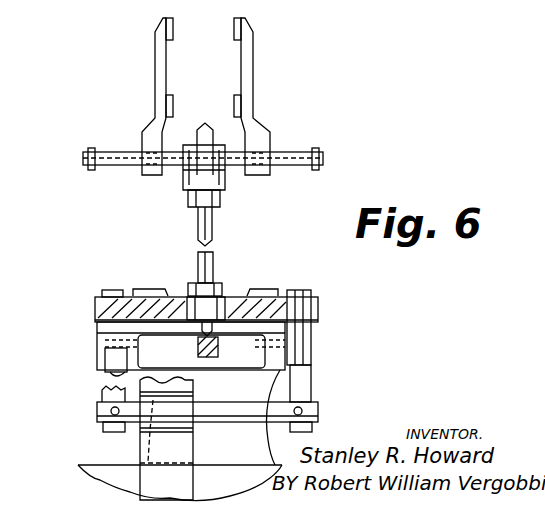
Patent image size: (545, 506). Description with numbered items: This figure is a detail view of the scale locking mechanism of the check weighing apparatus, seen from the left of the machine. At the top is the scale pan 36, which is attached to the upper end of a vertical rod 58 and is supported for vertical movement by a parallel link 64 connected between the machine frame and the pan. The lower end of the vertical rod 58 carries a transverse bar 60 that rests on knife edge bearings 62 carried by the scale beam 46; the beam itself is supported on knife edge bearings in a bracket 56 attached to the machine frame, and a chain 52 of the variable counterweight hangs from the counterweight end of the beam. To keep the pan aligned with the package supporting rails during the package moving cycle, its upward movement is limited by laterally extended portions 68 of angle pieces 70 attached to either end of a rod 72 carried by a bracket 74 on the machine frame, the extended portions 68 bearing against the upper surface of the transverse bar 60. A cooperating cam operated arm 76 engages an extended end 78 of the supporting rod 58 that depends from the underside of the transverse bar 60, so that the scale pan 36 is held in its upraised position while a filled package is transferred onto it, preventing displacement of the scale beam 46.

The scale pan 36 is at (220, 113).
The parallel link 64 is at (90, 170).
The vertical rod 58 is at (198, 226).
The scale beam 46 is at (262, 283).
The transverse bar 60 is at (95, 306).
The laterally extended portion 68 is at (113, 290).
The extended end 78 is at (200, 333).
The cam operated arm 76 is at (218, 346).
The knife edge bearings 62 is at (105, 358).
The angle pieces 70 is at (102, 395).
The rod 72 is at (210, 422).
The bracket 74 is at (145, 450).
The bracket 56 is at (272, 448).
The chain 52 is at (9, 269).